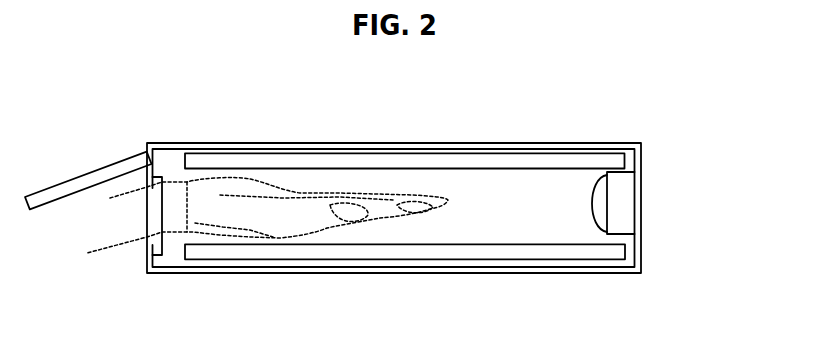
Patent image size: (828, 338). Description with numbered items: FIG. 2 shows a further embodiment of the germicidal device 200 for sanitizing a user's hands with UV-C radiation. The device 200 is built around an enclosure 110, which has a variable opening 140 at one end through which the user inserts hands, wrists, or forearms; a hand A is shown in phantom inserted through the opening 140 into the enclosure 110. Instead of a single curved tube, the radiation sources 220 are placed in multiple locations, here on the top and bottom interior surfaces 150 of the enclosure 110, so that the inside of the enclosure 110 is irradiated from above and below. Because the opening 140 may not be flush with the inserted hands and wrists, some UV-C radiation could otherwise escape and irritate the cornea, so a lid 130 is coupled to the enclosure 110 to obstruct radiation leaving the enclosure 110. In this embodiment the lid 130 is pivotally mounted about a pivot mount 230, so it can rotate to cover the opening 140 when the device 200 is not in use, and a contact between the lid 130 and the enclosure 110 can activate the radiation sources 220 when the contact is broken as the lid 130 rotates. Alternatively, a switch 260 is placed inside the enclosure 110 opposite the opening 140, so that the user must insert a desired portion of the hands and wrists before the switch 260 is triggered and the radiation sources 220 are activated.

The germicidal device 200 is at (492, 80).
The enclosure 110 is at (515, 143).
The lid 130 is at (88, 178).
The pivot mount 230 is at (149, 159).
The variable opening 140 is at (148, 240).
The radiation sources 220 is at (370, 162).
The interior surfaces 150 is at (520, 205).
The switch 260 is at (623, 197).
The hand A is at (252, 208).